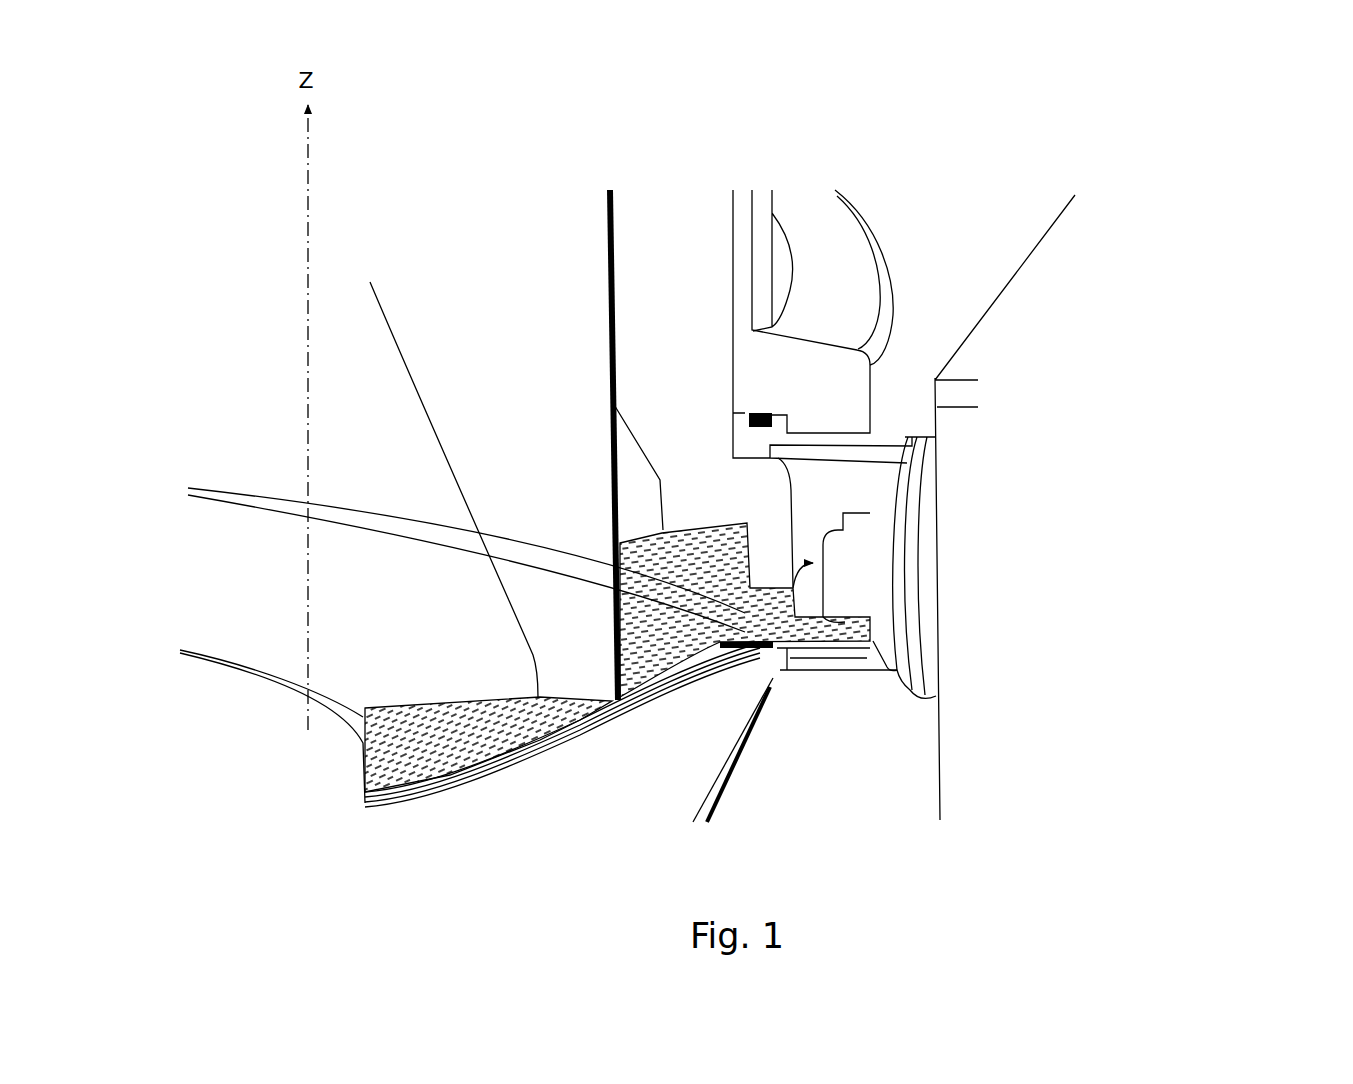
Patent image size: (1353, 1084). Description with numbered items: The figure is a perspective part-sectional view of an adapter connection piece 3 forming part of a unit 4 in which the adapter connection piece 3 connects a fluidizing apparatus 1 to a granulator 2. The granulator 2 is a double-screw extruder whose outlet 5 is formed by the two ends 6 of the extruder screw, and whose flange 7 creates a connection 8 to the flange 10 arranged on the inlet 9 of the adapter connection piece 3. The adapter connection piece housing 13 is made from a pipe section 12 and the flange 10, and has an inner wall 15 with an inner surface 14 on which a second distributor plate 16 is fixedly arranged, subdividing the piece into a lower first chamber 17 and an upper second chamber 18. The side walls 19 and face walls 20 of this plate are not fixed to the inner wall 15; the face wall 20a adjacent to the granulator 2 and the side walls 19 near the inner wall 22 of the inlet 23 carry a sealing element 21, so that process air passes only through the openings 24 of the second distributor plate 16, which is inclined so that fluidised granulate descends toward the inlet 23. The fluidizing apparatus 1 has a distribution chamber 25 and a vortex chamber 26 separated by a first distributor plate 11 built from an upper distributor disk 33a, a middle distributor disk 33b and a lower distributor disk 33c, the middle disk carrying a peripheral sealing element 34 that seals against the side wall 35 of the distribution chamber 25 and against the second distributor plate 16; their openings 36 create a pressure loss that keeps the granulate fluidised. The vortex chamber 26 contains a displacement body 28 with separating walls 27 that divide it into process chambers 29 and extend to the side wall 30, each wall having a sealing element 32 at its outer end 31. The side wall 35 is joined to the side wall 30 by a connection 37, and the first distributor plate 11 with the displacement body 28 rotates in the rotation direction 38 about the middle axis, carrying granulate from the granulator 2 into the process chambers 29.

The fluidizing apparatus 1 is at (475, 108).
The granulator 2 is at (1098, 405).
The adapter connection piece 3 is at (842, 700).
The unit 4 is at (242, 98).
The outlet 5 is at (790, 668).
The ends of the extruder screw 6 is at (850, 556).
The flange 7 is at (923, 472).
The connection 8 is at (923, 430).
The inlet 9 is at (898, 690).
The flange 10 is at (912, 437).
The first distributor plate 11 is at (360, 770).
The pipe section 12 is at (820, 663).
The adapter connection piece housing 13 is at (852, 680).
The inner surface 14 is at (867, 489).
The inner wall 15 is at (857, 504).
The second distributor plate 16 is at (852, 652).
The lower first chamber 17 is at (802, 653).
The upper second chamber 18 is at (933, 450).
The side walls 19 is at (778, 667).
The face walls 20 is at (879, 637).
The face wall 20a is at (876, 632).
The sealing element 21 is at (880, 645).
The inner wall 22 is at (740, 478).
The inlet 23 is at (737, 502).
The openings 24 is at (453, 557).
The distribution chamber 25 is at (565, 806).
The vortex chamber 26 is at (563, 494).
The separating walls 27 is at (640, 248).
The displacement body 28 is at (405, 478).
The process chambers 29 is at (535, 577).
The side wall 30 is at (738, 225).
The outer end 31 is at (605, 273).
The sealing element 32 is at (607, 223).
The upper distributor disk 33a is at (367, 795).
The middle distributor disk 33b is at (367, 803).
The lower distributor disk 33c is at (397, 800).
The sealing element 34 is at (460, 770).
The side wall 35 is at (707, 813).
The openings 36 is at (382, 721).
The connection 37 is at (902, 373).
The rotation direction 38 is at (363, 223).